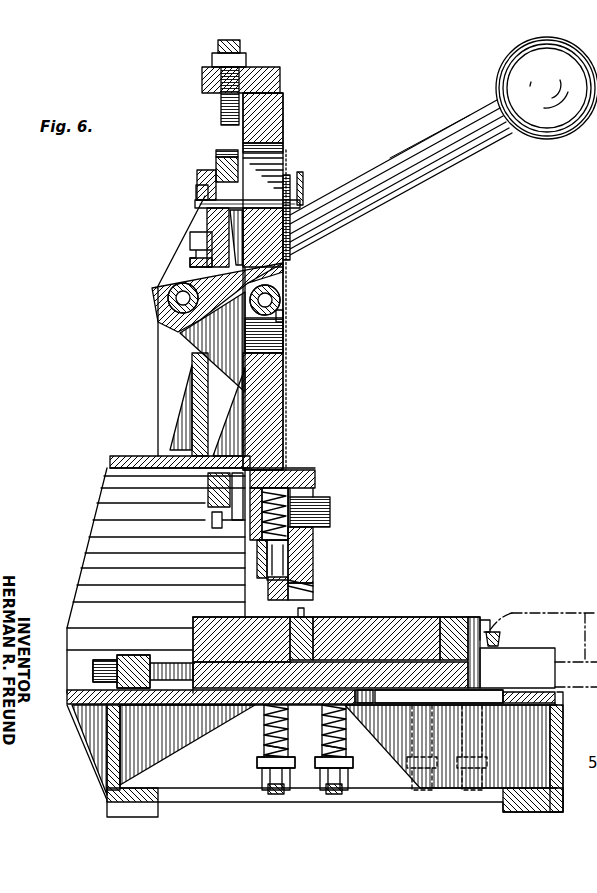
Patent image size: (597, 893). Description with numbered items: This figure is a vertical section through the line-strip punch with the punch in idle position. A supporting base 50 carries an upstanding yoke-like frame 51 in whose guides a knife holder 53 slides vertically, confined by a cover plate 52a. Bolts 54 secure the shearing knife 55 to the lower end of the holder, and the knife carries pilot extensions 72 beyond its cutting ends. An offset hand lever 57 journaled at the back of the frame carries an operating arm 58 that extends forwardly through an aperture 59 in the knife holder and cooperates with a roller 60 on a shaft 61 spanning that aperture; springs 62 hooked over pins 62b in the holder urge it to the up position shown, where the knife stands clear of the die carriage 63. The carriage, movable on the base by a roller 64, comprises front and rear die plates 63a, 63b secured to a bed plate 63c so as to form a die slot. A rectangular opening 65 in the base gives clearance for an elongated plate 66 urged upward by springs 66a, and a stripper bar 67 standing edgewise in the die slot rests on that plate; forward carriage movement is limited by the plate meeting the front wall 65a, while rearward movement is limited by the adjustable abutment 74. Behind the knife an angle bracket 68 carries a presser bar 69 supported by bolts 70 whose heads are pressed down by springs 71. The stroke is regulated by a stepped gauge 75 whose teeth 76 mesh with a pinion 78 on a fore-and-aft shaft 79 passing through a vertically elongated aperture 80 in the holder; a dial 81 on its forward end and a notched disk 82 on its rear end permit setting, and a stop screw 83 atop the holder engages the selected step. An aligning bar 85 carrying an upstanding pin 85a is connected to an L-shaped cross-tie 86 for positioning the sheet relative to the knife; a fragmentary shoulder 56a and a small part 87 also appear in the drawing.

The supporting base 50 is at (112, 750).
The yoke-like frame 51 is at (160, 430).
The cover plate 52a is at (287, 350).
The knife holder 53 is at (270, 103).
The bolts 54 is at (330, 512).
The shearing knife 55 is at (313, 548).
The shoulder 56a is at (294, 585).
The offset hand lever 57 is at (410, 158).
The operating arm 58 is at (275, 270).
The aperture 59 is at (270, 330).
The roller 60 is at (285, 316).
The shaft 61 is at (283, 299).
The springs 62 is at (208, 496).
The pins 62b is at (222, 530).
The die carriage 63 is at (552, 612).
The front die plate 63a is at (398, 613).
The rear die plate 63b is at (208, 632).
The bed plate 63c is at (455, 664).
The roller 64 is at (208, 704).
The rectangular opening 65 is at (408, 700).
The front wall 65a is at (500, 700).
The elongated plate 66 is at (262, 706).
The springs 66a is at (360, 746).
The stripper bar 67 is at (322, 706).
The angle bracket 68 is at (257, 566).
The presser bar 69 is at (270, 590).
The bolts 70 is at (280, 567).
The springs 71 is at (316, 482).
The pilot extensions 72 is at (305, 598).
The abutment 74 is at (165, 663).
The stepped gauge 75 is at (222, 150).
The teeth 76 is at (216, 165).
The pinion 78 is at (205, 188).
The fore-and-aft shaft 79 is at (200, 204).
The vertically elongated aperture 80 is at (285, 160).
The dial 81 is at (302, 180).
The notched disk 82 is at (210, 218).
The stop screw 83 is at (222, 112).
The aligning bar 85 is at (480, 620).
The upstanding pin 85a is at (305, 612).
The L-shaped cross-tie 86 is at (498, 634).
The stop step 87 is at (472, 618).